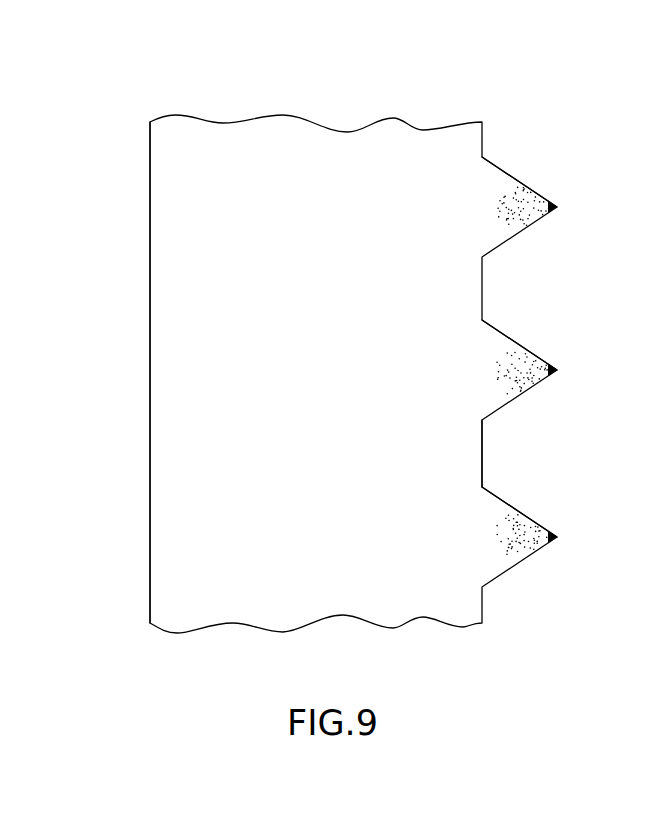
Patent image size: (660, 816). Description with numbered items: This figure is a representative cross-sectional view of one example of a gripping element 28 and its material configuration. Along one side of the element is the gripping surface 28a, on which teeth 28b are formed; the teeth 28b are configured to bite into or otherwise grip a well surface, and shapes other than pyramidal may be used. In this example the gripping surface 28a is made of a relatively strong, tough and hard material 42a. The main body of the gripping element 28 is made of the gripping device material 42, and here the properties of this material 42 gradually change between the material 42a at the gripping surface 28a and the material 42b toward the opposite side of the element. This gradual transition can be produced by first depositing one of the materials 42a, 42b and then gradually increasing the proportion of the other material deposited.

The gripping element 28 is at (363, 336).
The gripping surface 28a is at (482, 450).
The teeth 28b is at (523, 184).
The gripping device material 42 is at (210, 390).
The material 42a is at (548, 216).
The material 42b is at (180, 468).